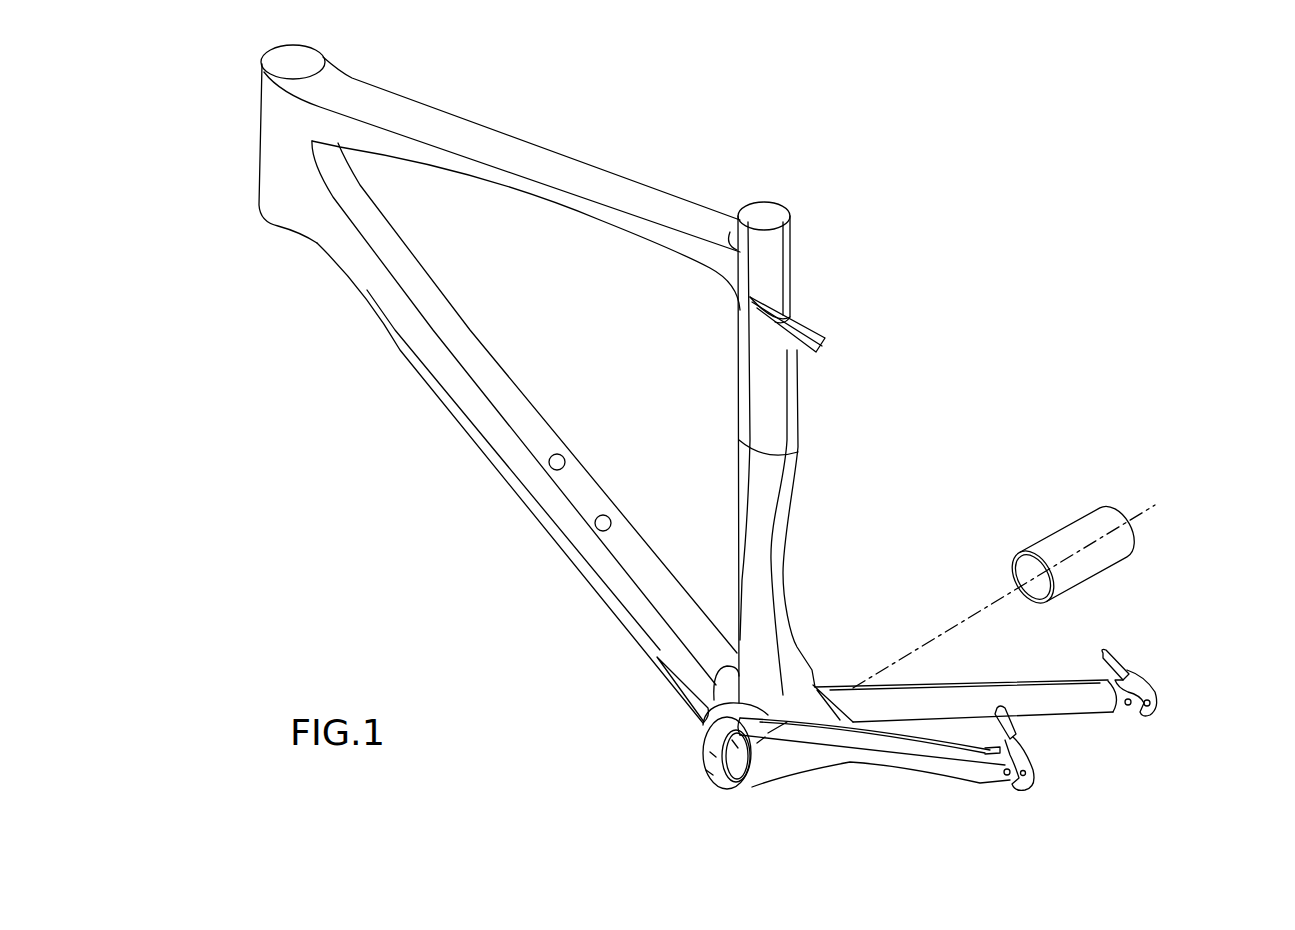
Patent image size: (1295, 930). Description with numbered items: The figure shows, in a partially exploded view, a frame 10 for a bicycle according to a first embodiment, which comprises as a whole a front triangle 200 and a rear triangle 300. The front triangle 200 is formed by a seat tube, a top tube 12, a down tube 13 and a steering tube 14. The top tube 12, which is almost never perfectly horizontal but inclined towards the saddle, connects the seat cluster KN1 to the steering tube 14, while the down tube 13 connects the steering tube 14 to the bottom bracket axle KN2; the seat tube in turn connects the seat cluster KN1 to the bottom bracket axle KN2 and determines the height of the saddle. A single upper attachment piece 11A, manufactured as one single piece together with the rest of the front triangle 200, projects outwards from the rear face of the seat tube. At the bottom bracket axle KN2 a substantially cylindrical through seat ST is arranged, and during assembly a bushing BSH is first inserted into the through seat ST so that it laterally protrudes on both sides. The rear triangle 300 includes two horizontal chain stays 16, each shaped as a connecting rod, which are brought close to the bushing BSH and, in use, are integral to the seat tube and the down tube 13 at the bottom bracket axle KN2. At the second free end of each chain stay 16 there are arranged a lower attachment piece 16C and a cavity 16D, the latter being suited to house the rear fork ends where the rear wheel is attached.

The frame for a bicycle 10 is at (663, 155).
The front triangle 200 is at (443, 102).
The rear triangle 300 is at (1007, 650).
The top tube 12 is at (570, 165).
The down tube 13 is at (533, 417).
The steering tube 14 is at (268, 139).
The upper attachment piece 11A is at (813, 333).
The horizontal chain stay 16 is at (1023, 688).
The lower attachment piece 16C is at (1112, 665).
The cavity 16D is at (1140, 718).
The seat cluster KN1 is at (782, 275).
The bottom bracket axle KN2 is at (715, 715).
The through seat ST is at (717, 778).
The bushing BSH is at (1080, 523).